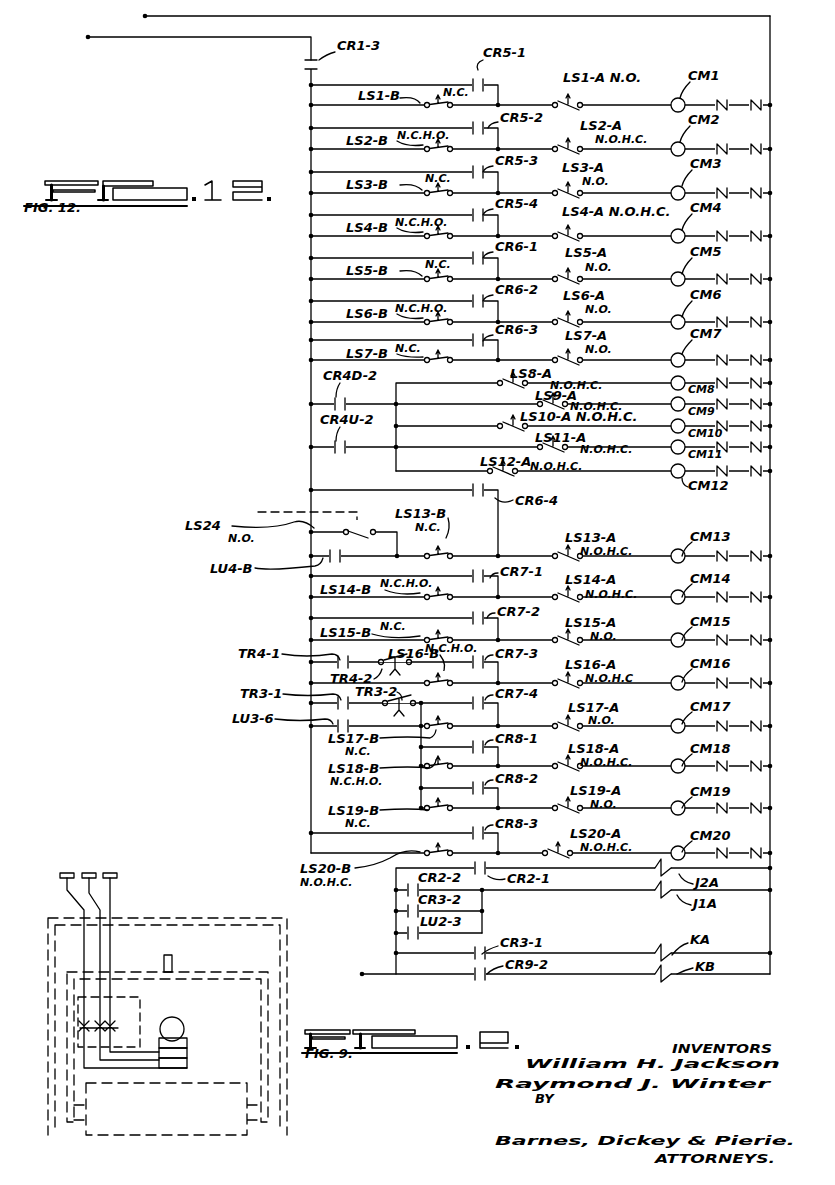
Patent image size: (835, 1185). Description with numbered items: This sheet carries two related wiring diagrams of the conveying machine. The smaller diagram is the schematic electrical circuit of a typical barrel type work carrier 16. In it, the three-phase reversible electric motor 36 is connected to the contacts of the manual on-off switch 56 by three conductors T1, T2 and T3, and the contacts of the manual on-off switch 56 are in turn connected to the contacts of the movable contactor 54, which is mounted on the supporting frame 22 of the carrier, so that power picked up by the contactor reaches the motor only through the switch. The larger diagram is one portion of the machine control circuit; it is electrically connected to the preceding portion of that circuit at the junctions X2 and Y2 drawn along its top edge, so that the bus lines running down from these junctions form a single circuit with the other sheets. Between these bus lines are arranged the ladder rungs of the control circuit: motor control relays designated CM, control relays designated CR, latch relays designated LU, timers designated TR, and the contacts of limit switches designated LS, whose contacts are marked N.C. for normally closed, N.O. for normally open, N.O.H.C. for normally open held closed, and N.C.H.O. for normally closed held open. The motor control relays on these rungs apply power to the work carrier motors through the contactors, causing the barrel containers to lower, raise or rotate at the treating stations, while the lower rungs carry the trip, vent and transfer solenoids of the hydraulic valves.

In FIG. 9, the work carrier 16 is at (175, 913).
In FIG. 12, the supporting frame 22 is at (362, 974).
In FIG. 9, the three-phase reversible electric motor 36 is at (181, 1022).
In FIG. 9, the movable contactor 54 is at (121, 864).
In FIG. 9, the manual on-off switch 56 is at (132, 1020).
In FIG. 9, the conductor T1 is at (190, 1046).
In FIG. 9, the conductor T2 is at (188, 1057).
In FIG. 9, the conductor T3 is at (185, 1072).
In FIG. 12, the junction X2 is at (147, 18).
In FIG. 12, the junction Y2 is at (90, 39).